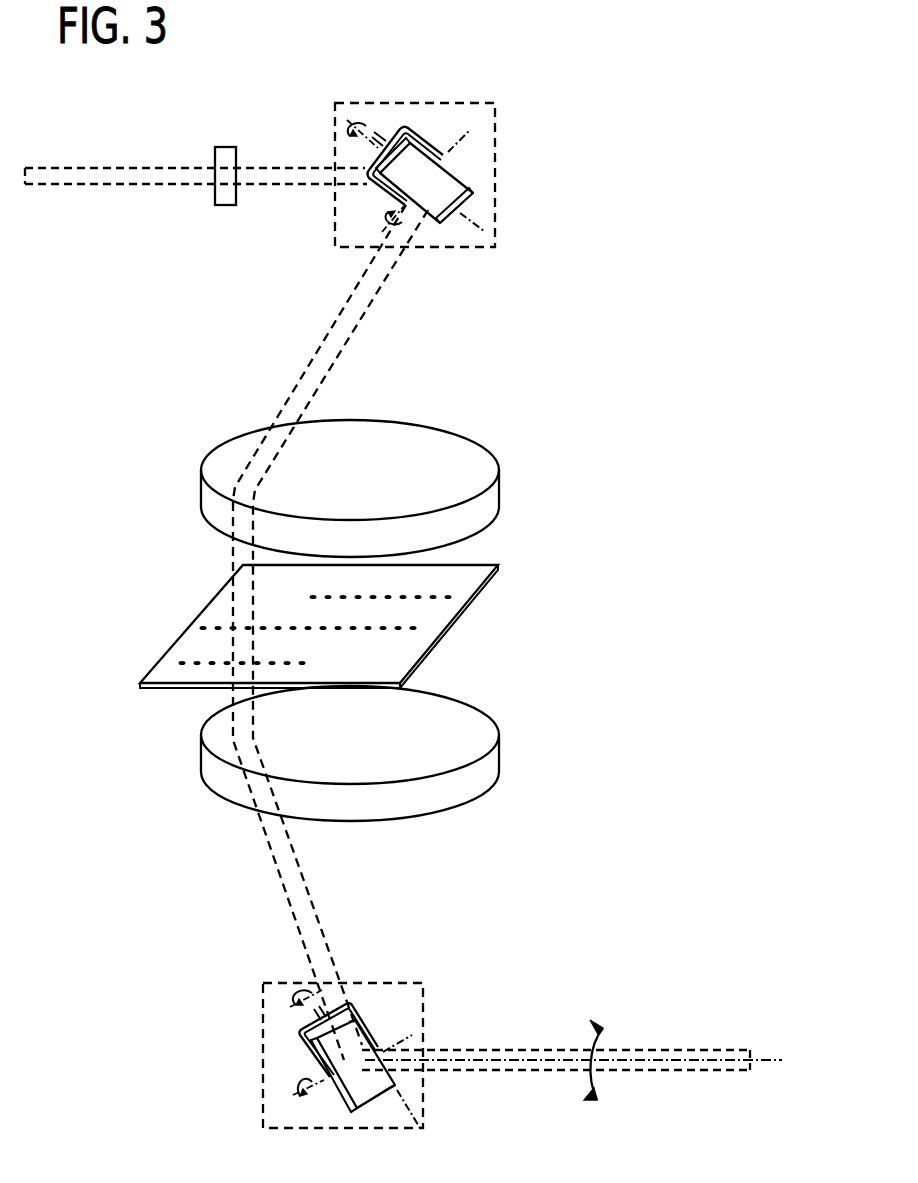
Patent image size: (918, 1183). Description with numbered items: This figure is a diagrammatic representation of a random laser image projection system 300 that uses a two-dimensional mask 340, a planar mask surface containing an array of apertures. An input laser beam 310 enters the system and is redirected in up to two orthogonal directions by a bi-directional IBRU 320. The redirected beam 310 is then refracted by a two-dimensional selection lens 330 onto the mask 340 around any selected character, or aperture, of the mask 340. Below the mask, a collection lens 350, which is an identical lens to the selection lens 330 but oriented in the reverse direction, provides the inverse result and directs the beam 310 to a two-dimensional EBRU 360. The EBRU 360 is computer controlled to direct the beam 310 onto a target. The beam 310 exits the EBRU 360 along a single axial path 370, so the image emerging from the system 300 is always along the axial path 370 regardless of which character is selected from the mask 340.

The laser projection and/or marking system 300 is at (628, 235).
The input laser beam 310 is at (88, 183).
The bi-directional IBRU 320 is at (486, 148).
The two-dimensional selection lens 330 is at (470, 452).
The two-dimensional mask 340 is at (462, 576).
The collection lens 350 is at (468, 710).
The two-dimensional EBRU 360 is at (390, 986).
The axial path 370 is at (765, 1058).